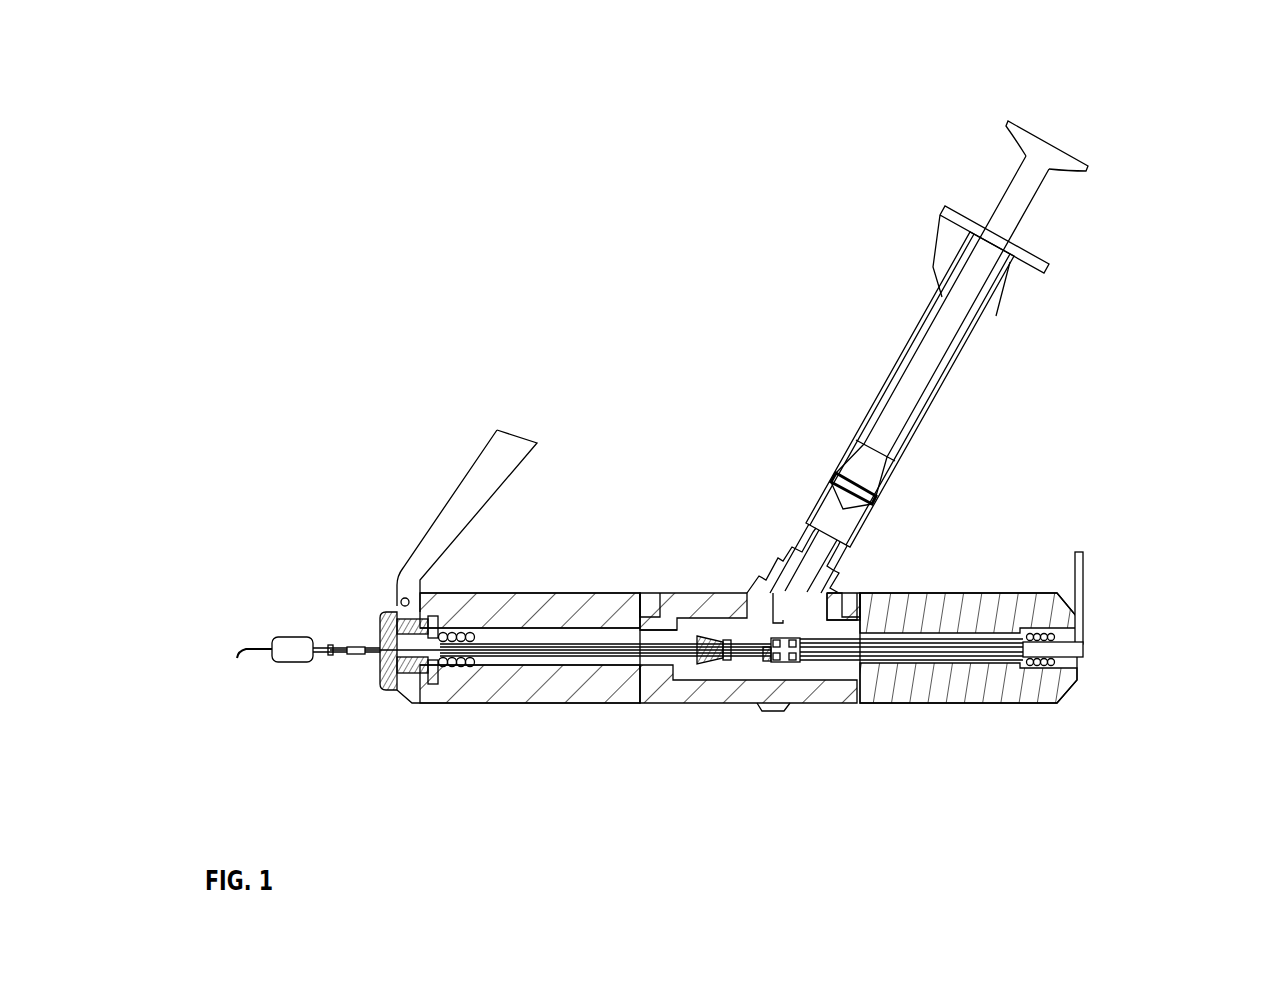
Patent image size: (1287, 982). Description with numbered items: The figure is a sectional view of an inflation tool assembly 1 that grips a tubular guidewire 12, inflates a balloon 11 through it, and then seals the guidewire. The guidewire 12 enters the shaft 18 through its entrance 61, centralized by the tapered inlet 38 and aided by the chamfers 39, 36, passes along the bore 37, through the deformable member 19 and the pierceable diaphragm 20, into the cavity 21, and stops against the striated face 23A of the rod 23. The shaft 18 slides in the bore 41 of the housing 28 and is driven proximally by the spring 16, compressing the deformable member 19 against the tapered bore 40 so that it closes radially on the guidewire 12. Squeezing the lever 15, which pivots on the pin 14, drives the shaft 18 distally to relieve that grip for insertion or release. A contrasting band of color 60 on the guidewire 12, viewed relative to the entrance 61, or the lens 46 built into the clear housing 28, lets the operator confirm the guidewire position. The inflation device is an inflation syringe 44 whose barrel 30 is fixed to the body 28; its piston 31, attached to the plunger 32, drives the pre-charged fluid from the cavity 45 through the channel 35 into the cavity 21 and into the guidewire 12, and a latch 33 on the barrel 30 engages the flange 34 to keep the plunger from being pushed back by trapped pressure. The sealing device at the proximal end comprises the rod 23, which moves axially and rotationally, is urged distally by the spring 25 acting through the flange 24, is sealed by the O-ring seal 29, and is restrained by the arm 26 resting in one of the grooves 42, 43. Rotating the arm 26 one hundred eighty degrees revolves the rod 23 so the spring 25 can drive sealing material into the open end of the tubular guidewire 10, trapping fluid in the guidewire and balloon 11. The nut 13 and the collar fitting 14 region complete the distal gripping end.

The assembly 1 is at (667, 730).
The tubular guidewire 10 is at (237, 642).
The balloon 11 is at (282, 632).
The tubular guidewire 12 is at (320, 642).
The nut 13 is at (378, 689).
The pin 14 is at (430, 635).
The lever 15 is at (472, 640).
The spring 16 is at (436, 688).
The shaft 18 is at (534, 660).
The deformable member 19 is at (703, 662).
The pierceable diaphragm 20 is at (724, 666).
The cavity 21 is at (766, 713).
The rod 23 is at (801, 659).
The face of rod 23A is at (792, 665).
The flange 24 is at (1084, 600).
The spring 25 is at (1025, 645).
The arm 26 is at (1082, 556).
The housing 28 is at (786, 671).
The O-ring seal 29 is at (801, 630).
The barrel 30 is at (838, 560).
The piston 31 is at (813, 500).
The plunger 32 is at (892, 413).
The latch 33 is at (933, 257).
The flange 34 is at (945, 310).
The channel 35 is at (770, 620).
The chamfer 36 is at (728, 640).
The bore 37 is at (403, 552).
The tapered inlet 38 is at (405, 606).
The chamfer 39 is at (693, 640).
The tapered bore 40 is at (705, 623).
The bore 41 is at (572, 625).
The groove 42 is at (1040, 637).
The groove 43 is at (1062, 682).
The inflation syringe 44 is at (1000, 313).
The cavity 45 is at (837, 521).
The lens 46 is at (767, 666).
The contrasting band of color 60 is at (352, 640).
The entrance 61 is at (373, 637).